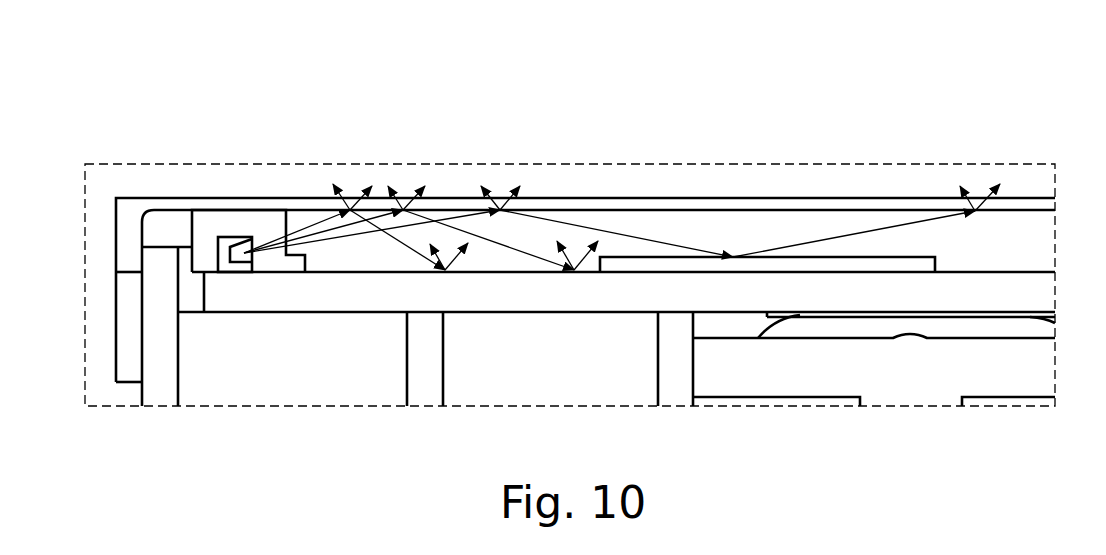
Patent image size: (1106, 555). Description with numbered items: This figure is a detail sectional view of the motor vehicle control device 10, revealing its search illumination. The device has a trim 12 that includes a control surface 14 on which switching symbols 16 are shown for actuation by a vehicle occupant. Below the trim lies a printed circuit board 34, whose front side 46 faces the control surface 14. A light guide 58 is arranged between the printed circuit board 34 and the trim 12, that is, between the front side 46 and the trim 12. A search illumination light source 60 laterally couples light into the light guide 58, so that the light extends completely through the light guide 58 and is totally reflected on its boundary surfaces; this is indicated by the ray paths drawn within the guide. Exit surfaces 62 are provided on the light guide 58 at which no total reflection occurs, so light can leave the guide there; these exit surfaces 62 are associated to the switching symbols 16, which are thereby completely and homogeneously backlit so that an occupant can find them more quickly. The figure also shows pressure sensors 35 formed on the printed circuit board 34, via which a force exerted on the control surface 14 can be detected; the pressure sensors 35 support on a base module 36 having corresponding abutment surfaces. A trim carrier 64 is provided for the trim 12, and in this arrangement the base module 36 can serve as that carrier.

The motor vehicle control device 10 is at (182, 108).
The trim 12 is at (130, 215).
The control surface 14 is at (576, 197).
The switching symbols 16 is at (457, 205).
The printed circuit board 34 is at (282, 295).
The pressure sensors 35 is at (813, 316).
The base module 36 is at (678, 370).
The front side 46 is at (883, 269).
The light guide 58 is at (795, 222).
The search illumination light source 60 is at (230, 245).
The exit surfaces 62 is at (381, 205).
The trim carrier 64 is at (764, 422).